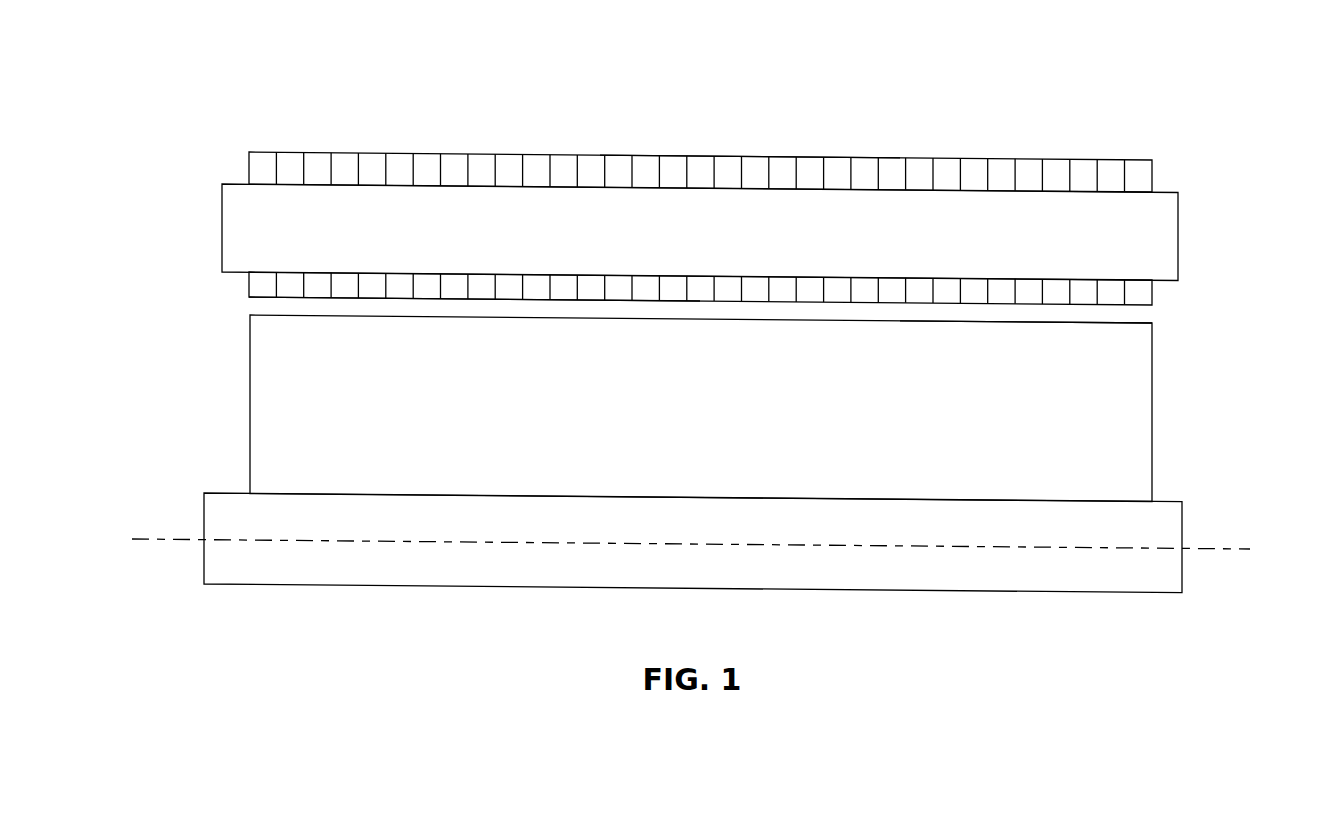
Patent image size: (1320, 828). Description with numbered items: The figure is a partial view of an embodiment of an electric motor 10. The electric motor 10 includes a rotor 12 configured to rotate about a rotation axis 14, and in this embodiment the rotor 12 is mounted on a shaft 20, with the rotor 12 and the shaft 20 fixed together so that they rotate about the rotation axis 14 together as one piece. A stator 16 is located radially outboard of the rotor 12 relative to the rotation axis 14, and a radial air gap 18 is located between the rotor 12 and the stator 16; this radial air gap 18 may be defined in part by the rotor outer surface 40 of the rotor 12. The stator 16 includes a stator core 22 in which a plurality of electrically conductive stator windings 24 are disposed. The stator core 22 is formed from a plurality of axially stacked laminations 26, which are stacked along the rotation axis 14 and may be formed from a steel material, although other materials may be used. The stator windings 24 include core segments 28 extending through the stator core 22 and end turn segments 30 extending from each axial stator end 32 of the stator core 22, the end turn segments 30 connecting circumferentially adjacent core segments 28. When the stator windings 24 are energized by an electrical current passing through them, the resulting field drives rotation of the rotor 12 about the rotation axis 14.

The electric motor 10 is at (203, 74).
The rotor 12 is at (677, 415).
The rotation axis 14 is at (1240, 548).
The stator 16 is at (1052, 108).
The radial air gap 18 is at (254, 307).
The shaft 20 is at (578, 570).
The stator core 22 is at (755, 156).
The stator windings 24 is at (845, 217).
The laminations 26 is at (533, 170).
The core segments 28 is at (738, 217).
The end turn segments 30 is at (243, 234).
The axial stator end 32 is at (249, 167).
The rotor outer surface 40 is at (1036, 324).